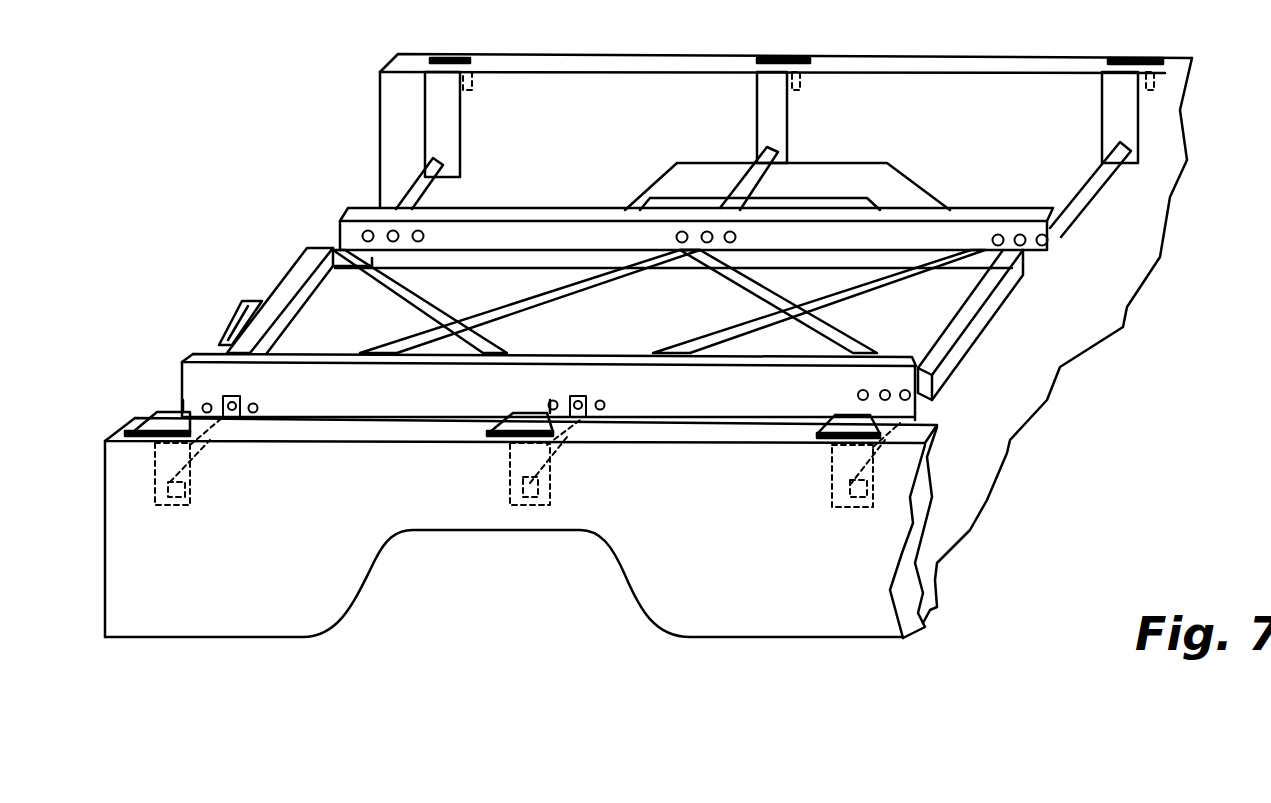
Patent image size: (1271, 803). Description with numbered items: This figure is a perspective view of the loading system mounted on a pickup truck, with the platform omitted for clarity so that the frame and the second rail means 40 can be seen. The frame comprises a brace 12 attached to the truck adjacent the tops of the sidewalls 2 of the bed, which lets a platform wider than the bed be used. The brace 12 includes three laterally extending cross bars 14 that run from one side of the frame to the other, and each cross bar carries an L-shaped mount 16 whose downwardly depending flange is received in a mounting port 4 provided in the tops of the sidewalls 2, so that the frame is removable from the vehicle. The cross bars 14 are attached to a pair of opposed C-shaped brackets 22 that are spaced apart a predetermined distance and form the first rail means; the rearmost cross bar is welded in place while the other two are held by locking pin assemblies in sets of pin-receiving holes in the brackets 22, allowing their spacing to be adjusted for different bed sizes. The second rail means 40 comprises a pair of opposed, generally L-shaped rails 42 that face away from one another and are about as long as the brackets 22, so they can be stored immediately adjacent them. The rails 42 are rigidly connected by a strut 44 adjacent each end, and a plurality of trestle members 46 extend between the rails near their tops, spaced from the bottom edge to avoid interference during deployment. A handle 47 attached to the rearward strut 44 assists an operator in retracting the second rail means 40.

The sidewalls 2 is at (551, 62).
The mounting ports 4 is at (480, 55).
The brace 12 is at (734, 122).
The cross bars 14 is at (437, 185).
The L-shaped mount 16 is at (447, 110).
The C-shaped brackets 22 is at (982, 212).
The second rail means 40 is at (301, 255).
The L-shaped rails 42 is at (372, 260).
The strut 44 is at (297, 303).
The trestle members 46 is at (747, 285).
The handle 47 is at (232, 314).